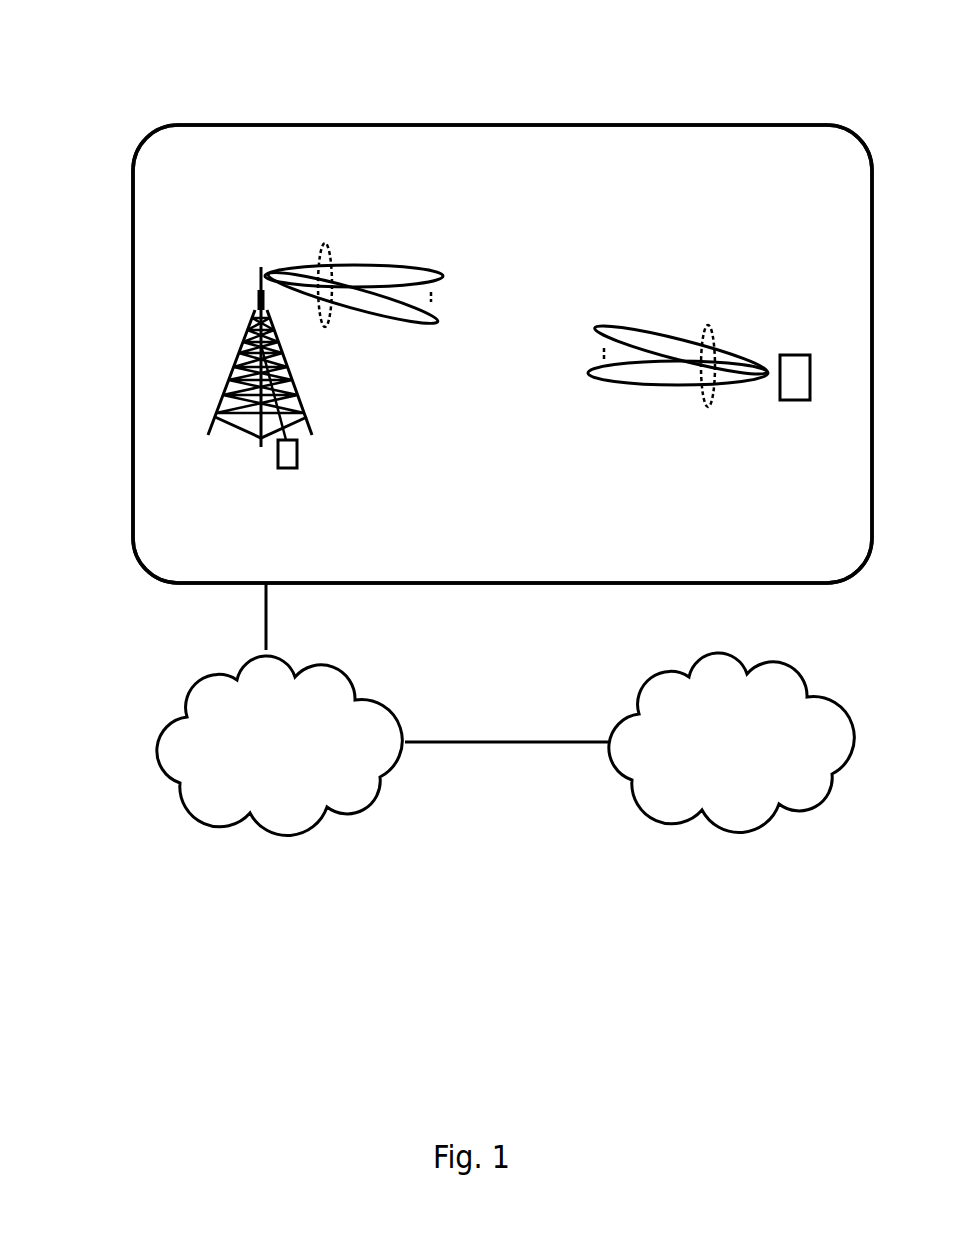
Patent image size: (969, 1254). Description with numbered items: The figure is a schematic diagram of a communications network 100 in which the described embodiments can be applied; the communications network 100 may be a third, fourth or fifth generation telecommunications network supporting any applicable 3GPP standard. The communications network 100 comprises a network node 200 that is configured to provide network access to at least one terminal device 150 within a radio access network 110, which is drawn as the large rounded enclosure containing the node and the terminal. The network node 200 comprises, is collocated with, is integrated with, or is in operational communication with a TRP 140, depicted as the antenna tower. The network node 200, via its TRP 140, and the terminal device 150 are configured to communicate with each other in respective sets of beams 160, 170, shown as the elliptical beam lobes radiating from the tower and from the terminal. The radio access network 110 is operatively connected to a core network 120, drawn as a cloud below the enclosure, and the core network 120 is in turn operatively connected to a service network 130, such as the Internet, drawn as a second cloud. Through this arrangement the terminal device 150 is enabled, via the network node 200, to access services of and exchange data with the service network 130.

The communications network 100 is at (212, 63).
The radio access network 110 is at (133, 405).
The core network 120 is at (307, 764).
The service network 130 is at (758, 762).
The TRP 140 is at (258, 286).
The terminal device 150 is at (797, 400).
The set of beams 160 is at (326, 245).
The set of beams 170 is at (708, 407).
The network node 200 is at (278, 462).